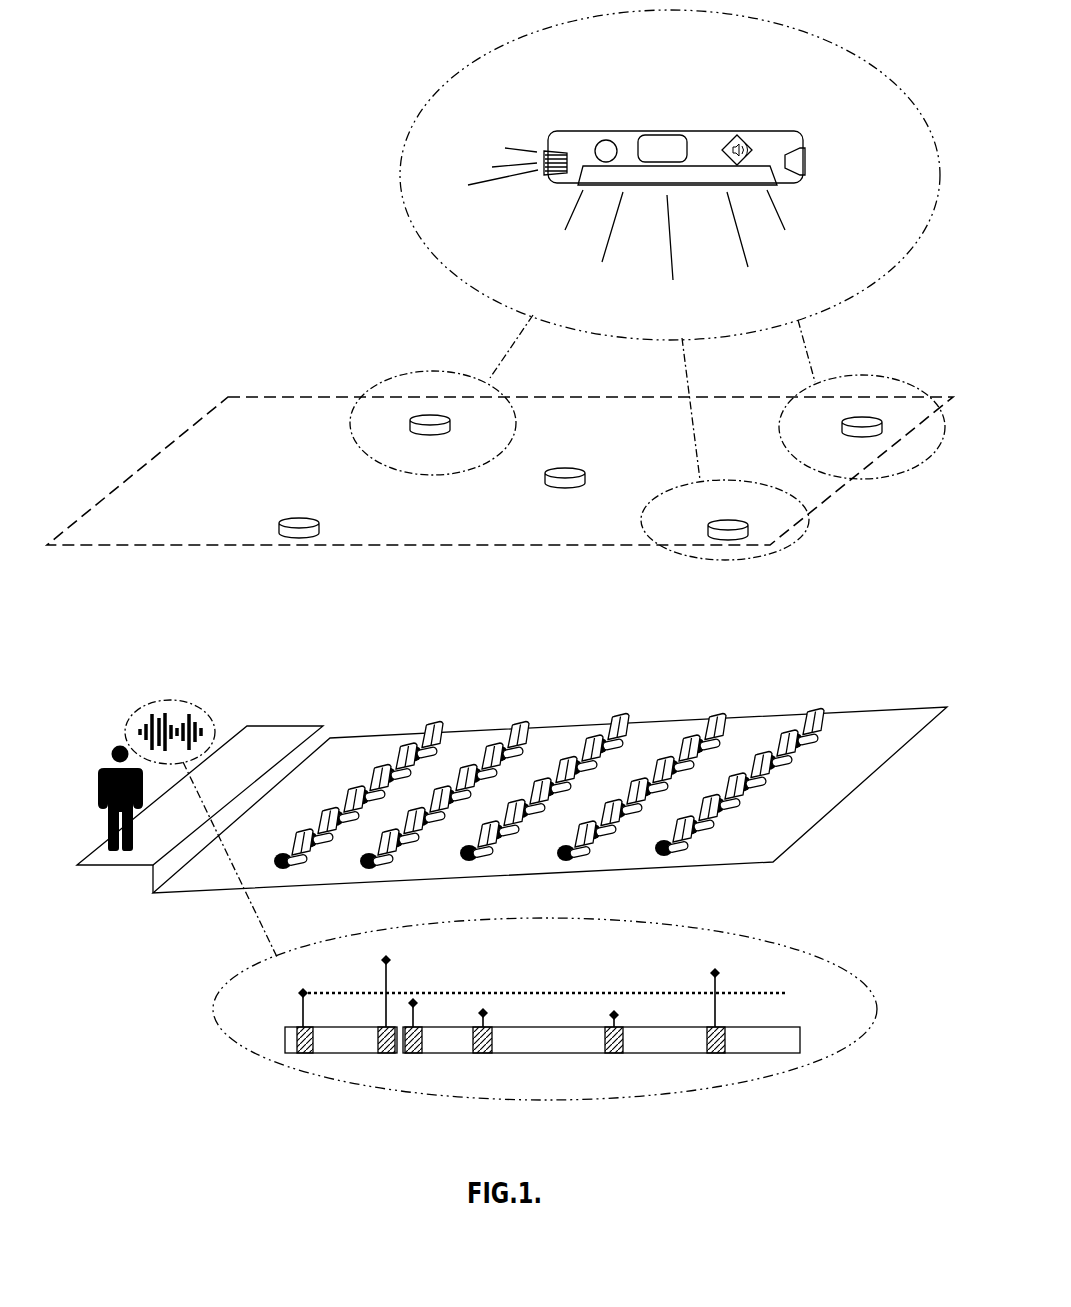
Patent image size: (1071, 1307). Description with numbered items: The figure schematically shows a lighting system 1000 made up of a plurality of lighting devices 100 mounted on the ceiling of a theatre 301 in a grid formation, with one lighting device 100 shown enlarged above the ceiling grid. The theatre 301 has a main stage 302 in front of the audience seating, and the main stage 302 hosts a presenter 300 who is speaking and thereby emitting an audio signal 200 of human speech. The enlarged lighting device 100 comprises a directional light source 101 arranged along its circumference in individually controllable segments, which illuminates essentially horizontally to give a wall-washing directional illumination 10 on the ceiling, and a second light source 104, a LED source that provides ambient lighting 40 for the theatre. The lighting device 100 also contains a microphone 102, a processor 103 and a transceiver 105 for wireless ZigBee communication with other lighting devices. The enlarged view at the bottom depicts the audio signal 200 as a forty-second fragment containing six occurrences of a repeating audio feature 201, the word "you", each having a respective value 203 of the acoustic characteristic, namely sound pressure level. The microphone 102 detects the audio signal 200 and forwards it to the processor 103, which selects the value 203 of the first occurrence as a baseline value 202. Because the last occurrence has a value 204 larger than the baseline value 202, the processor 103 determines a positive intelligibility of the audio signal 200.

The lighting system 1000 is at (279, 170).
The lighting device 100 is at (629, 105).
The directional light source 101 is at (549, 150).
The microphone 102 is at (606, 140).
The processor 103 is at (672, 135).
The second light source 104 is at (753, 167).
The transceiver 105 is at (740, 138).
The directional illumination 10 is at (476, 153).
The ambient lighting 40 is at (705, 256).
The audio signal 200 is at (198, 698).
The presenter 300 is at (92, 763).
The theatre 301 is at (890, 795).
The main stage 302 is at (108, 867).
The repeating audio feature 201 is at (405, 1050).
The baseline value 202 is at (518, 984).
The value of acoustic characteristic 203 is at (386, 960).
The value of acoustic characteristic of last occurrence 204 is at (706, 967).